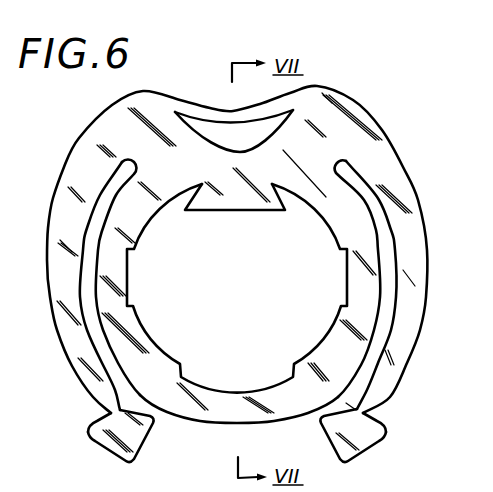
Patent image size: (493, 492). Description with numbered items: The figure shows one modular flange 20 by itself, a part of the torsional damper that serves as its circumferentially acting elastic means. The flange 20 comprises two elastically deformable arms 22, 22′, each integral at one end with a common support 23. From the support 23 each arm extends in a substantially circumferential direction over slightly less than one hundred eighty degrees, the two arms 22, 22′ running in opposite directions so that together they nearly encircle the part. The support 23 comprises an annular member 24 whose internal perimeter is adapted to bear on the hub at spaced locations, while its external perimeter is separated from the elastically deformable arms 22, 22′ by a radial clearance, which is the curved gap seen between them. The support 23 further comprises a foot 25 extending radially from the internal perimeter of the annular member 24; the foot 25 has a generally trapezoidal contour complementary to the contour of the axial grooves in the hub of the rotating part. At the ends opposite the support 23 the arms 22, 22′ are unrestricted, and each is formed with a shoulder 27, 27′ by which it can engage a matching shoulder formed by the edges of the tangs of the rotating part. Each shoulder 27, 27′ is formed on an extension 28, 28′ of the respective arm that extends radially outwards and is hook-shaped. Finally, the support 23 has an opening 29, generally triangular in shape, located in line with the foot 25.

The modular flange 20 is at (411, 117).
The elastically deformable arm 22 is at (73, 331).
The elastically deformable arm 22′ is at (402, 331).
The support 23 is at (334, 84).
The annular member 24 is at (373, 248).
The foot 25 is at (235, 210).
The shoulder 27 is at (92, 422).
The shoulder 27′ is at (389, 419).
The extension 28 is at (105, 435).
The extension 28′ is at (377, 435).
The opening 29 is at (195, 122).